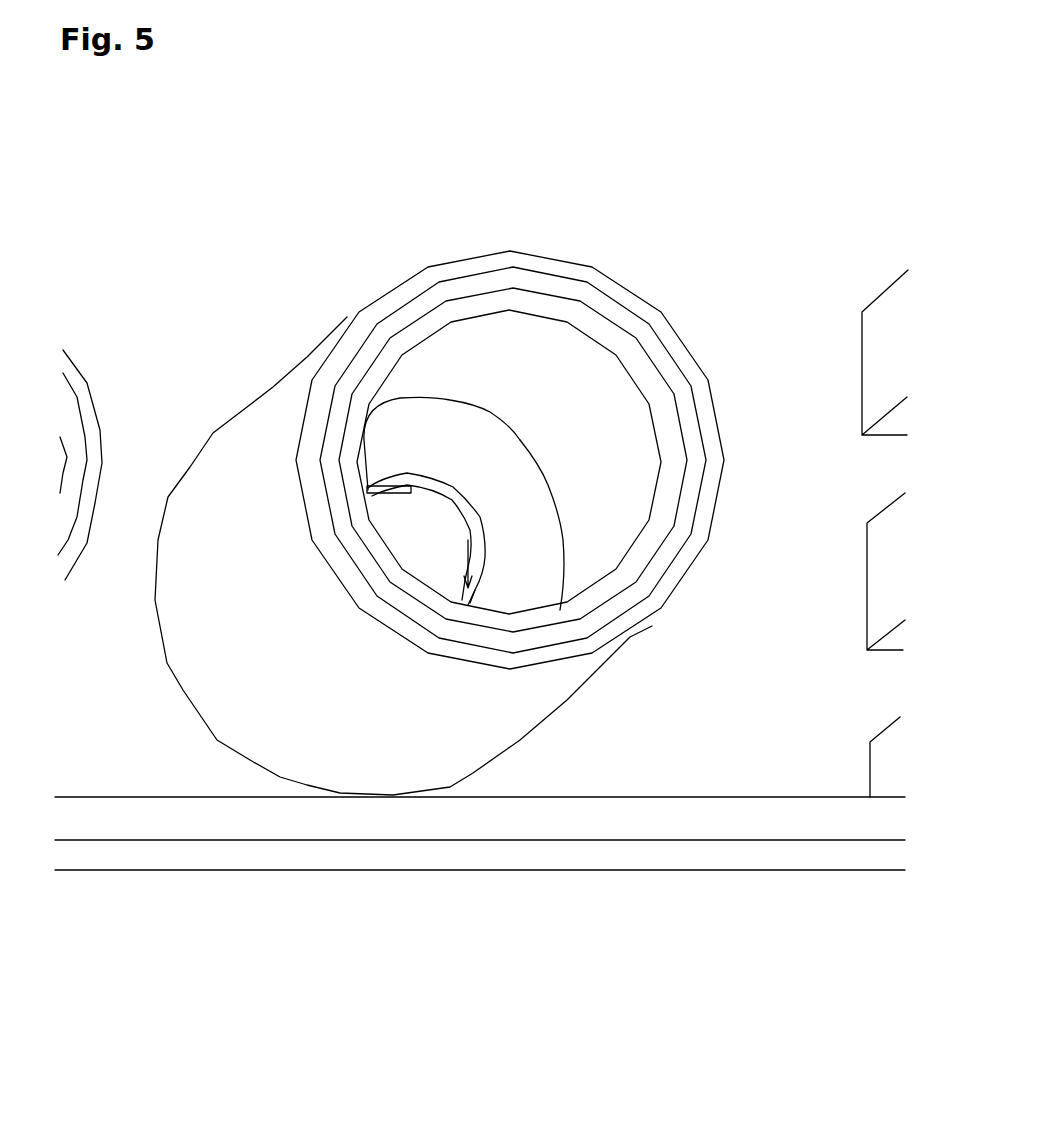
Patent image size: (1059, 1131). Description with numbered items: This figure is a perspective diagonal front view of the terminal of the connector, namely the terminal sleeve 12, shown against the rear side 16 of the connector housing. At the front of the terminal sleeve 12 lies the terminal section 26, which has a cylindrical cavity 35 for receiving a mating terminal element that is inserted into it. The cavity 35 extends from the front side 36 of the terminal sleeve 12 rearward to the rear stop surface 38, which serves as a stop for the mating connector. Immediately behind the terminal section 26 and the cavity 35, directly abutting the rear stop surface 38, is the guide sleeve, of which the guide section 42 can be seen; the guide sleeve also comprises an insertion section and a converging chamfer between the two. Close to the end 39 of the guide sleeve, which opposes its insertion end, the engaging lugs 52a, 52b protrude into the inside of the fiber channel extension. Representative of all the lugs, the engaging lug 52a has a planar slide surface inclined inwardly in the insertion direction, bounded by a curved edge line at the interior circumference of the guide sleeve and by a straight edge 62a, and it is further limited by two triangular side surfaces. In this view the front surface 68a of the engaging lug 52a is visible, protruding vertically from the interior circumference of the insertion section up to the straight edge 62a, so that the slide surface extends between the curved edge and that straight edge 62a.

The terminal sleeve 12 is at (678, 333).
The rear side 16 is at (648, 763).
The terminal section 26 is at (722, 490).
The cavity 35 is at (488, 383).
The front side 36 is at (680, 542).
The rear stop surface 38 is at (530, 588).
The end 39 is at (400, 434).
The guide section 42 is at (437, 488).
The engaging lug 52a is at (465, 518).
The engaging lug 52b is at (383, 495).
The straight edge 62a is at (465, 553).
The front surface 68a is at (470, 587).